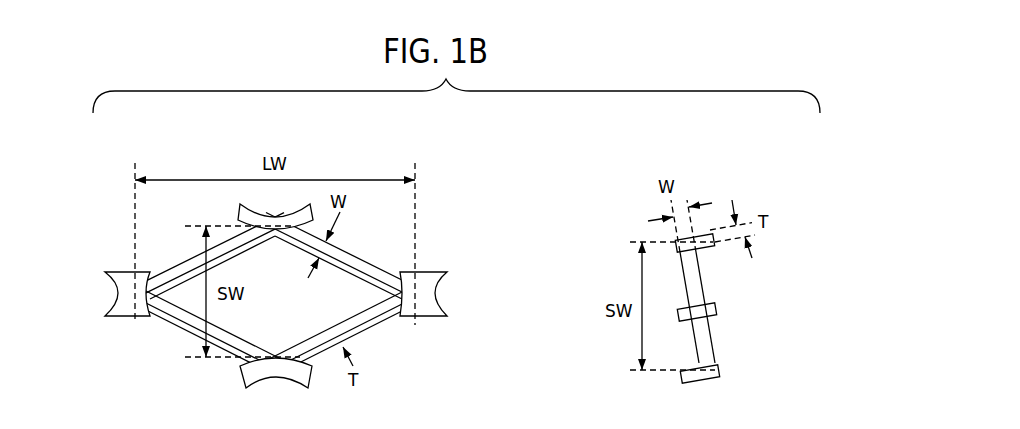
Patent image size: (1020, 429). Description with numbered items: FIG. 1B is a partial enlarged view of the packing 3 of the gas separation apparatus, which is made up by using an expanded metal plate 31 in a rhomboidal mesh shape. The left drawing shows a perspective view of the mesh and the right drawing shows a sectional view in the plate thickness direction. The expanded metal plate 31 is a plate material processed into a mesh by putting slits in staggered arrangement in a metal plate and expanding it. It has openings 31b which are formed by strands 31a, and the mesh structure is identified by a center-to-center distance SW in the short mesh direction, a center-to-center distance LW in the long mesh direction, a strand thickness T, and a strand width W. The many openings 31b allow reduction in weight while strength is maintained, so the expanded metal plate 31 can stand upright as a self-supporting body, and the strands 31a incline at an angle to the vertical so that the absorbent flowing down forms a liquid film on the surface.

The packing 3 is at (441, 296).
The expanded metal plate 31 is at (474, 295).
The strand 31a is at (367, 318).
The opening 31b is at (327, 286).